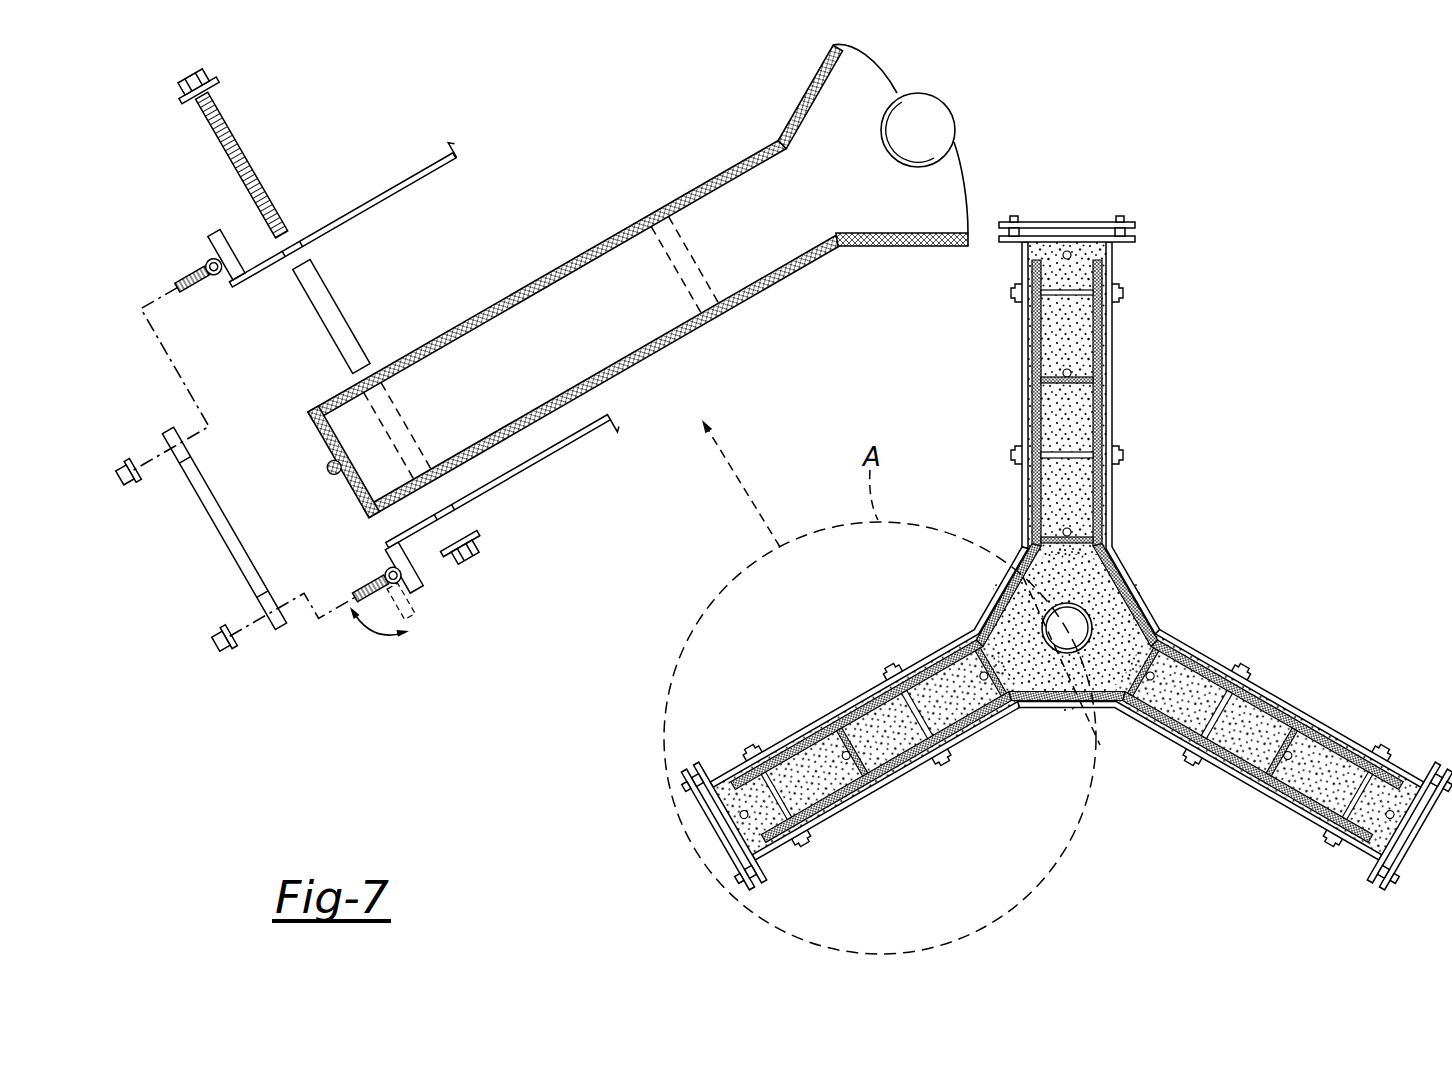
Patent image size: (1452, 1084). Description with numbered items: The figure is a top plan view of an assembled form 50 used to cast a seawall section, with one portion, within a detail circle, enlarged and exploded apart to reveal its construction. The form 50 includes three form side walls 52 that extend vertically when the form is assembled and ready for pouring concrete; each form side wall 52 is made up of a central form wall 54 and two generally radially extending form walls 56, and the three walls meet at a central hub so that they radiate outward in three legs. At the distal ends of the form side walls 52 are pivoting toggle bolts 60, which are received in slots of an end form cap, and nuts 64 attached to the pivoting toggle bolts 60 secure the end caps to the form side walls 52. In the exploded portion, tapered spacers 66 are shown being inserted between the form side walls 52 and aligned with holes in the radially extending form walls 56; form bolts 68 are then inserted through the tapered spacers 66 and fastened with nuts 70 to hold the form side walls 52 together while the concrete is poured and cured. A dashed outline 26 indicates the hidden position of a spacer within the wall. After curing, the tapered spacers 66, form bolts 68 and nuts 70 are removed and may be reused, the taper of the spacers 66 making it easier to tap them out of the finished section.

The hidden divider plate position 26 is at (667, 253).
The form 50 is at (1180, 398).
The form side wall 52 is at (397, 182).
The central form wall 54 is at (813, 90).
The radially extending form wall 56 is at (1107, 330).
The pivoting toggle bolt 60 is at (370, 582).
The nut 64 is at (215, 648).
The tapered spacer 66 is at (327, 308).
The form bolt 68 is at (230, 164).
The nut 70 is at (468, 560).